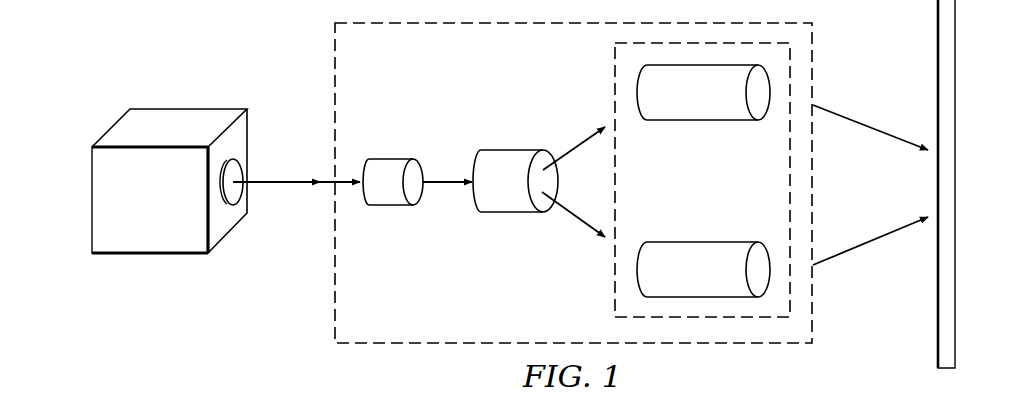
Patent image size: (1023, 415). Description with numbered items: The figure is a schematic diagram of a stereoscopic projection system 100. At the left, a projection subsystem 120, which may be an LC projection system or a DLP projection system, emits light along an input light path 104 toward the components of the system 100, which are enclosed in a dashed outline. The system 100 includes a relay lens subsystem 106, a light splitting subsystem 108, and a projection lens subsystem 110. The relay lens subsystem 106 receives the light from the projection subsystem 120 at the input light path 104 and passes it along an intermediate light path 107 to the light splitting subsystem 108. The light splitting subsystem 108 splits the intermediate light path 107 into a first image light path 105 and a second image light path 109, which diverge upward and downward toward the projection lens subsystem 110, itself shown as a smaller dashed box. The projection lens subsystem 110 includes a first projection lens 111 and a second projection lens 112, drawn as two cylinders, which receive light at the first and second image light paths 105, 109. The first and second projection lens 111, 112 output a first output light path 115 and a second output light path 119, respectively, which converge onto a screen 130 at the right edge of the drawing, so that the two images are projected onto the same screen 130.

The stereoscopic projection system 100 is at (335, 50).
The input light path 104 is at (292, 177).
The first image light path 105 is at (580, 143).
The relay lens subsystem 106 is at (392, 158).
The intermediate light path 107 is at (448, 178).
The light splitting subsystem 108 is at (500, 148).
The second image light path 109 is at (572, 217).
The projection lens subsystem 110 is at (613, 67).
The first projection lens 111 is at (703, 122).
The second projection lens 112 is at (703, 240).
The first output light path 115 is at (853, 118).
The second output light path 119 is at (853, 248).
The projection subsystem 120 is at (173, 105).
The screen 130 is at (957, 72).